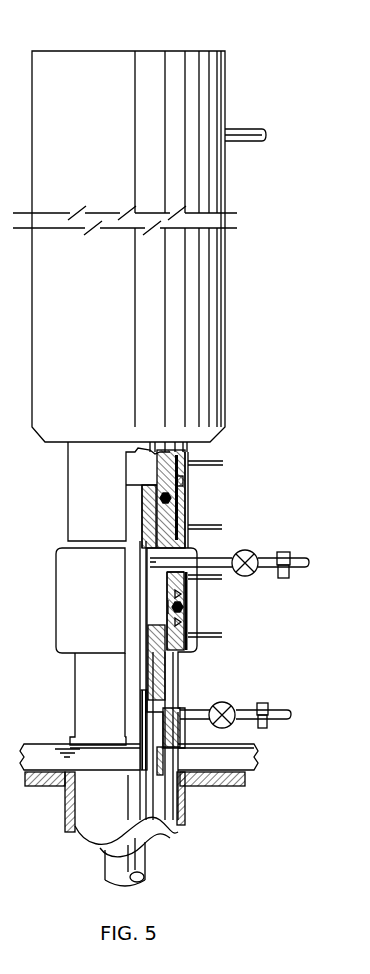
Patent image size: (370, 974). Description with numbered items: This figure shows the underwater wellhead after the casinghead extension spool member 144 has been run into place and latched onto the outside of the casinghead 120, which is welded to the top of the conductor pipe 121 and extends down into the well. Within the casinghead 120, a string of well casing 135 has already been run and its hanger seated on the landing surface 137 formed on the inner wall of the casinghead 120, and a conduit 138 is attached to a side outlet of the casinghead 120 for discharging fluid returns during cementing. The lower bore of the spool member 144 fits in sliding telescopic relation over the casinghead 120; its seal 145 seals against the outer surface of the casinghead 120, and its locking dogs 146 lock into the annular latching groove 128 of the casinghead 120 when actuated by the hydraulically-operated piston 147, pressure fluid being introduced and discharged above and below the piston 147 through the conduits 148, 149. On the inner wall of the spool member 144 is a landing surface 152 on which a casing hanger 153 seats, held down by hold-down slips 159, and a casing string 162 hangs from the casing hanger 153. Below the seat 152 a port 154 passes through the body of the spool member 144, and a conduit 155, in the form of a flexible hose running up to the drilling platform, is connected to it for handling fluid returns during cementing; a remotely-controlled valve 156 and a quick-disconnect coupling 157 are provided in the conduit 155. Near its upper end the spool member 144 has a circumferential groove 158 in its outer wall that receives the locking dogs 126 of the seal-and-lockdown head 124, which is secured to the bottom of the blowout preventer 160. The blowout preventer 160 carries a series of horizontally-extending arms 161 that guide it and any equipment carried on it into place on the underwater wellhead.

The casinghead 120 is at (176, 681).
The conductor pipe 121 is at (83, 801).
The seal-and-lockdown head 124 is at (183, 481).
The locking dogs 126 is at (171, 498).
The latching groove 128 is at (172, 605).
The well casing 135 is at (103, 850).
The landing surface 137 is at (170, 710).
The conduit 138 is at (198, 716).
The extension spool member 144 is at (188, 549).
The seal 145 is at (195, 596).
The locking dogs 146 is at (172, 611).
The hydraulically-operated piston 147 is at (193, 615).
The conduit 148 is at (216, 580).
The conduit 149 is at (205, 640).
The landing surface 152 is at (142, 548).
The casing hanger 153 is at (140, 518).
The port 154 is at (150, 565).
The conduit 155 is at (296, 573).
The remotely-controlled valve 156 is at (245, 550).
The quick-disconnect coupling 157 is at (290, 552).
The circumferential groove 158 is at (153, 490).
The hold-down slips 159 is at (180, 516).
The blowout preventer 160 is at (205, 350).
The horizontally-extending arms 161 is at (240, 130).
The casing string 162 is at (142, 700).